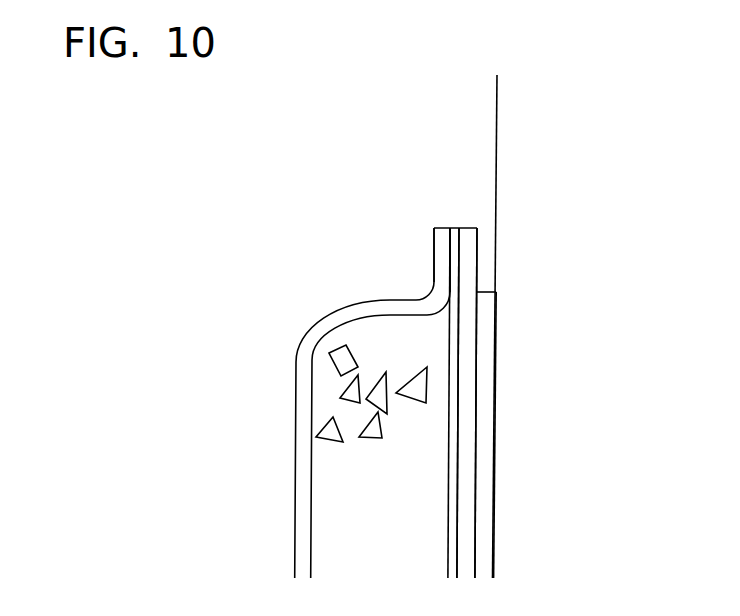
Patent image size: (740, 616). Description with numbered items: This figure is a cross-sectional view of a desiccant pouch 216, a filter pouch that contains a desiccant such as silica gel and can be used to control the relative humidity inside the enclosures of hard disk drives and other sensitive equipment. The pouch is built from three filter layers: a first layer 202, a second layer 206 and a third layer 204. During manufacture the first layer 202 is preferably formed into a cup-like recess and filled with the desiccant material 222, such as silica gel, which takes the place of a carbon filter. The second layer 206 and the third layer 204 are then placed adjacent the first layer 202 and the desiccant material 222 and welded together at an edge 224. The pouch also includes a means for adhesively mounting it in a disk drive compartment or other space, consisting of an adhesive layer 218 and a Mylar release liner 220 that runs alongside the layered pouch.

The desiccant pouch 216 is at (140, 254).
The first filter layer 202 is at (302, 365).
The third filter layer 204 is at (468, 448).
The second filter layer 206 is at (452, 561).
The adhesive layer 218 is at (488, 357).
The Mylar release liner 220 is at (497, 175).
The desiccant material 222 is at (368, 472).
The edge 224 is at (439, 253).